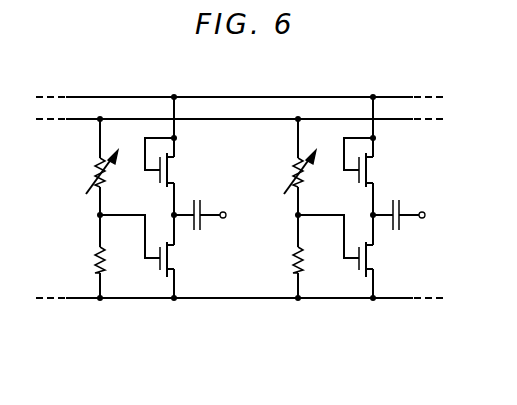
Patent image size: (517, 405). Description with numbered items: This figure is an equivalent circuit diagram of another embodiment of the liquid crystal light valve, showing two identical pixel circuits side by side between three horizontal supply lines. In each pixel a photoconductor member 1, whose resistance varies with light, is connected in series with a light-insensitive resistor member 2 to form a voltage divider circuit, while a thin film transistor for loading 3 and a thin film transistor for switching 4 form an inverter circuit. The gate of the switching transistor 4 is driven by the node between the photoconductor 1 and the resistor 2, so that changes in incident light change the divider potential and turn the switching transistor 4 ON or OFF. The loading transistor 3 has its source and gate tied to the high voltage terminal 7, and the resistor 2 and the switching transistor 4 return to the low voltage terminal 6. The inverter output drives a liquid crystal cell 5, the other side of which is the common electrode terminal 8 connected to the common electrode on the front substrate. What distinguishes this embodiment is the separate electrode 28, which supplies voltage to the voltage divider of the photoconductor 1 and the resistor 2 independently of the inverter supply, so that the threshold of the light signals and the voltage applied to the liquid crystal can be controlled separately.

The photoconductor member 1 is at (87, 173).
The resistor member 2 is at (90, 259).
The thin film transistor for loading 3 is at (180, 170).
The thin film transistor for switching 4 is at (163, 275).
The liquid crystal cell 5 is at (197, 232).
The low voltage terminal 6 is at (340, 299).
The high voltage terminal 7 is at (259, 96).
The common electrode terminal 8 is at (228, 215).
The electrode 28 is at (122, 118).